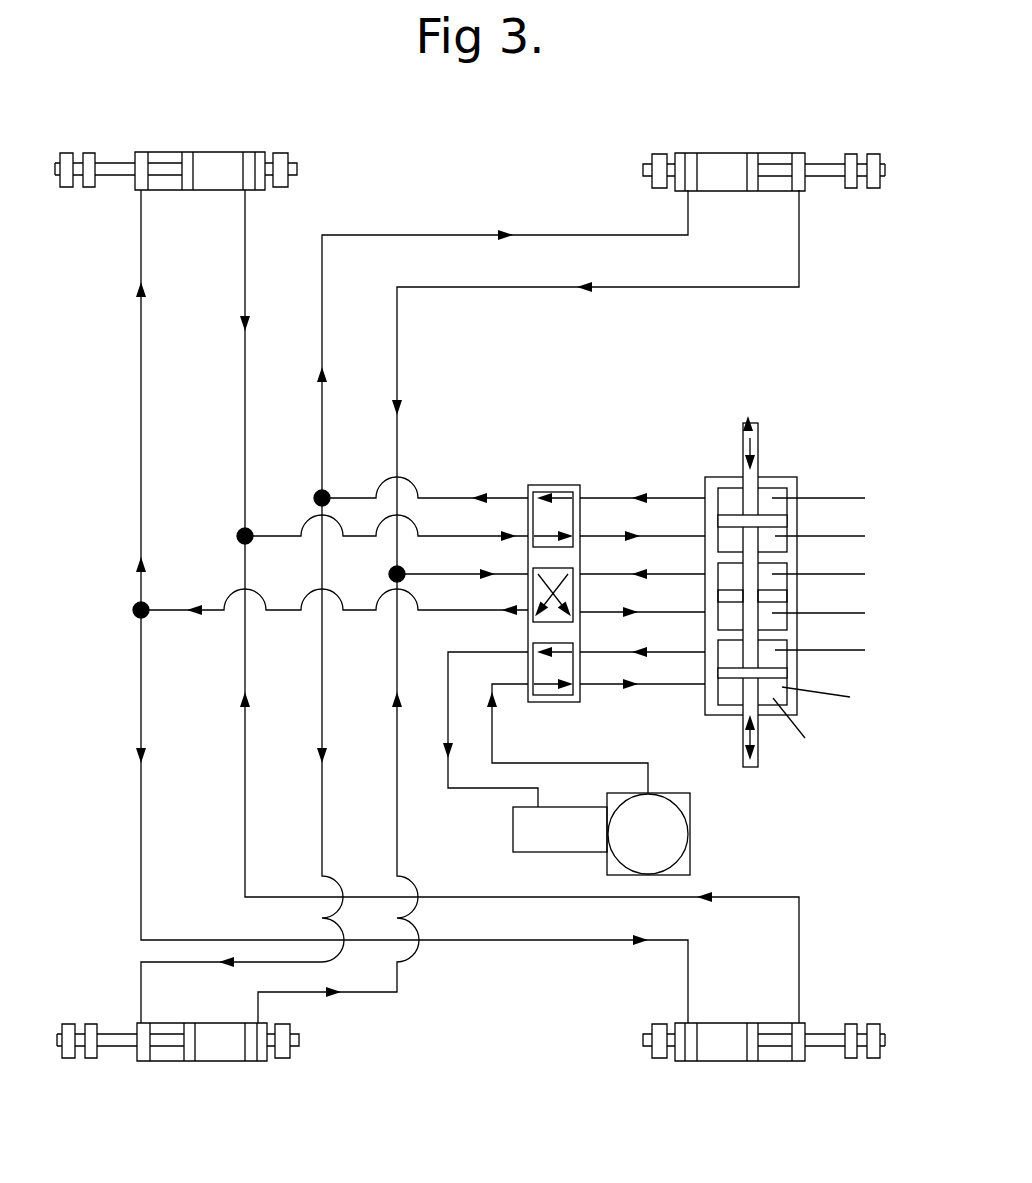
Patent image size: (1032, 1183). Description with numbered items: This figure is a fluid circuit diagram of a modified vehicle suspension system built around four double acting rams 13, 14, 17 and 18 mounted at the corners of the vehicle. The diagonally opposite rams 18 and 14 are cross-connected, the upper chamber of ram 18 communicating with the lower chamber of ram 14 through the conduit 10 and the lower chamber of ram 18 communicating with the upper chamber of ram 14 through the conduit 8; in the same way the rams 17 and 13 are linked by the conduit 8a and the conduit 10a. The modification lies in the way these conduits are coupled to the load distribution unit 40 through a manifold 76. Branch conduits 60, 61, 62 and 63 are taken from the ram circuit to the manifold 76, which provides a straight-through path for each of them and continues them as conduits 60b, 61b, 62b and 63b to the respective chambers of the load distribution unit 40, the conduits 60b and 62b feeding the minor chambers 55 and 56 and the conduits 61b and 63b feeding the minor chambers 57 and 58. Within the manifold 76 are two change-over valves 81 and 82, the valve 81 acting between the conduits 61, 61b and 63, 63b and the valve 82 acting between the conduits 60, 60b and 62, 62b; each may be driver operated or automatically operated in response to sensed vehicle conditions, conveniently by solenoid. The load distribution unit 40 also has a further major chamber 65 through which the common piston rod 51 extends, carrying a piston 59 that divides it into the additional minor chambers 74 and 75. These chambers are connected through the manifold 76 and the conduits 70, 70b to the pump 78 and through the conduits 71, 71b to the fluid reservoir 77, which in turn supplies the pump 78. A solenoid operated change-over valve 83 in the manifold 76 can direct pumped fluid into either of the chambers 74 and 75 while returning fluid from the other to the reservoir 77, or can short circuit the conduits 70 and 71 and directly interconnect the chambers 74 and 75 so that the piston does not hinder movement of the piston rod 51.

The conduit 8 is at (140, 405).
The conduit 8a is at (683, 290).
The conduit 10 is at (250, 272).
The conduit 10a is at (400, 235).
The double acting ram 13 is at (735, 155).
The double acting ram 14 is at (735, 1062).
The double acting ram 17 is at (215, 1062).
The double acting ram 18 is at (222, 152).
The load distribution unit 40 is at (803, 581).
The piston rod 51 is at (760, 455).
The minor chamber 55 is at (810, 605).
The minor chamber 56 is at (810, 591).
The minor chamber 57 is at (810, 530).
The minor chamber 58 is at (810, 515).
The piston 59 is at (768, 672).
The branch conduit 60 is at (478, 611).
The conduit 60b is at (682, 610).
The branch conduit 61 is at (470, 535).
The conduit 61b is at (597, 535).
The branch conduit 62 is at (472, 573).
The conduit 62b is at (655, 573).
The branch conduit 63 is at (462, 497).
The conduit 63b is at (583, 493).
The further major chamber 65 is at (803, 732).
The conduit 70 is at (575, 763).
The conduit 70b is at (620, 690).
The conduit 71 is at (490, 790).
The conduit 71b is at (645, 660).
The minor chamber 74 is at (808, 667).
The minor chamber 75 is at (833, 693).
The manifold 76 is at (509, 549).
The fluid reservoir 77 is at (543, 855).
The pump 78 is at (690, 830).
The change-over valve 81 is at (528, 620).
The change-over valve 82 is at (530, 490).
The solenoid operated change-over valve 83 is at (548, 697).